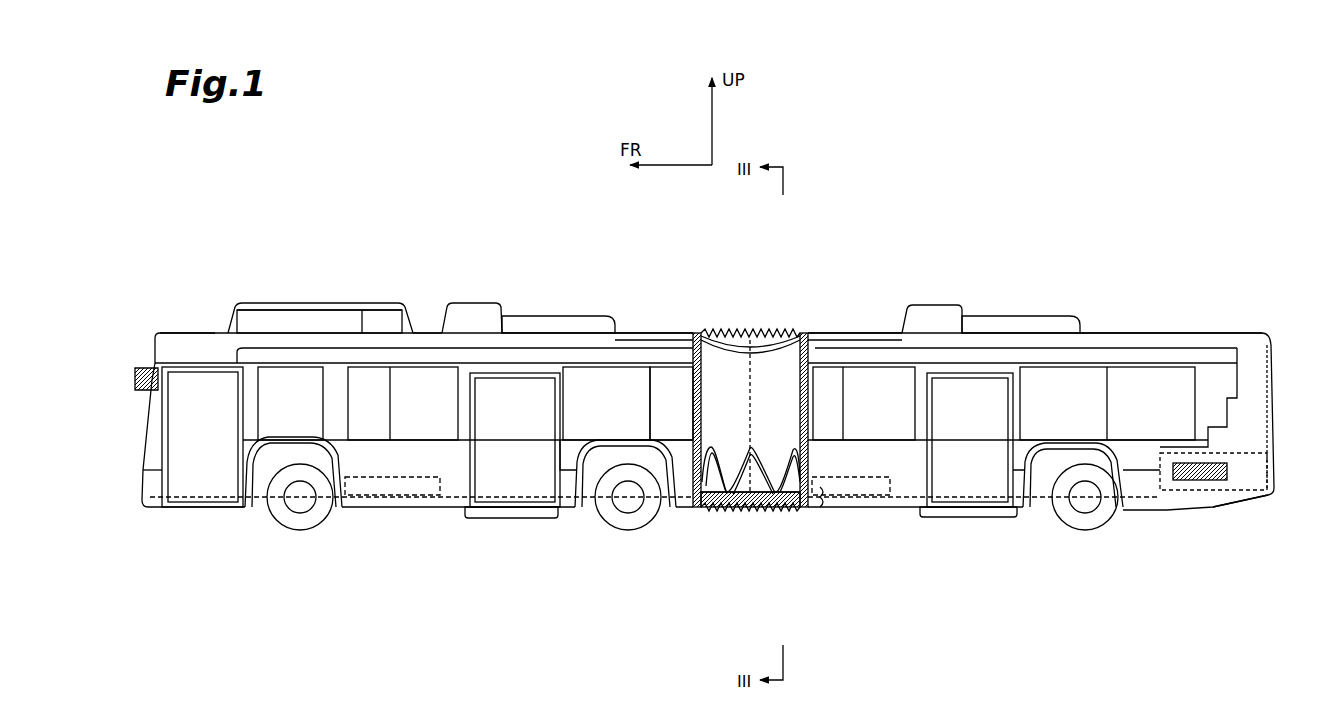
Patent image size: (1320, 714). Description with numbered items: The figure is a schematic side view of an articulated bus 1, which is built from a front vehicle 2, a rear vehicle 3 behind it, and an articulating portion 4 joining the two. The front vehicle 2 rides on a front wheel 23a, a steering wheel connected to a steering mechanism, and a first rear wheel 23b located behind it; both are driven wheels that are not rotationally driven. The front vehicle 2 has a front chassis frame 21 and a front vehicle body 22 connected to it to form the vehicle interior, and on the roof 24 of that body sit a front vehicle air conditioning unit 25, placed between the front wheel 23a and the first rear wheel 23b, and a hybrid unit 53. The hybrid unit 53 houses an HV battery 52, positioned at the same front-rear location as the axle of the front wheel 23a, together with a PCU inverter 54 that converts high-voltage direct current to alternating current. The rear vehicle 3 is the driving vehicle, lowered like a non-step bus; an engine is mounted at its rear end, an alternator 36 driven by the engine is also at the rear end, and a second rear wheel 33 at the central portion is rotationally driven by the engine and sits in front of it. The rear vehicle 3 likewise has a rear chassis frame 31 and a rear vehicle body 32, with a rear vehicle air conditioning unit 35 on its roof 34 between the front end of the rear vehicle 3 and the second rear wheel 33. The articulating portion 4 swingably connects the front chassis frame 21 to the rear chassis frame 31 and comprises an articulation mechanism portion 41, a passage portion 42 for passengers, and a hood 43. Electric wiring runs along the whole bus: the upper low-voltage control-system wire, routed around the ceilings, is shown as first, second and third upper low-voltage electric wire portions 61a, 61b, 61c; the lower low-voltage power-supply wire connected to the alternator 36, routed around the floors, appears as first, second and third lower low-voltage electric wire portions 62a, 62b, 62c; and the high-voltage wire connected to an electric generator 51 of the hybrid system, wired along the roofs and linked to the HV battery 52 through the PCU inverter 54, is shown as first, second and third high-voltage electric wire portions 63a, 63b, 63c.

The articulated bus 1 is at (1052, 223).
The front vehicle 2 is at (172, 327).
The rear vehicle 3 is at (1271, 328).
The articulating portion 4 is at (790, 328).
The front chassis frame 21 is at (419, 498).
The front vehicle body 22 is at (426, 331).
The front wheel 23a is at (300, 530).
The first rear wheel 23b is at (628, 530).
The roof 24 is at (199, 331).
The front vehicle air conditioning unit 25 is at (472, 300).
The rear chassis frame 31 is at (882, 520).
The rear vehicle body 32 is at (1125, 331).
The second rear wheel 33 is at (1100, 528).
The roof 34 is at (1225, 331).
The rear vehicle air conditioning unit 35 is at (927, 304).
The alternator 36 is at (1262, 500).
The articulation mechanism portion 41 is at (746, 521).
The passage portion 42 is at (781, 521).
The hood 43 is at (723, 331).
The electric generator 51 is at (1177, 507).
The HV battery 52 is at (277, 300).
The hybrid unit 53 is at (303, 300).
The PCU inverter 54 is at (375, 300).
The first upper low-voltage electric wire portion 61a is at (1027, 347).
The second upper low-voltage electric wire portion 61b is at (528, 347).
The third upper low-voltage electric wire portion 61c is at (740, 443).
The first lower low-voltage electric wire portion 62a is at (968, 520).
The second lower low-voltage electric wire portion 62b is at (511, 520).
The third lower low-voltage electric wire portion 62c is at (708, 521).
The first high-voltage electric wire portion 63a is at (865, 331).
The second high-voltage electric wire portion 63b is at (627, 331).
The third high-voltage electric wire portion 63c is at (763, 331).